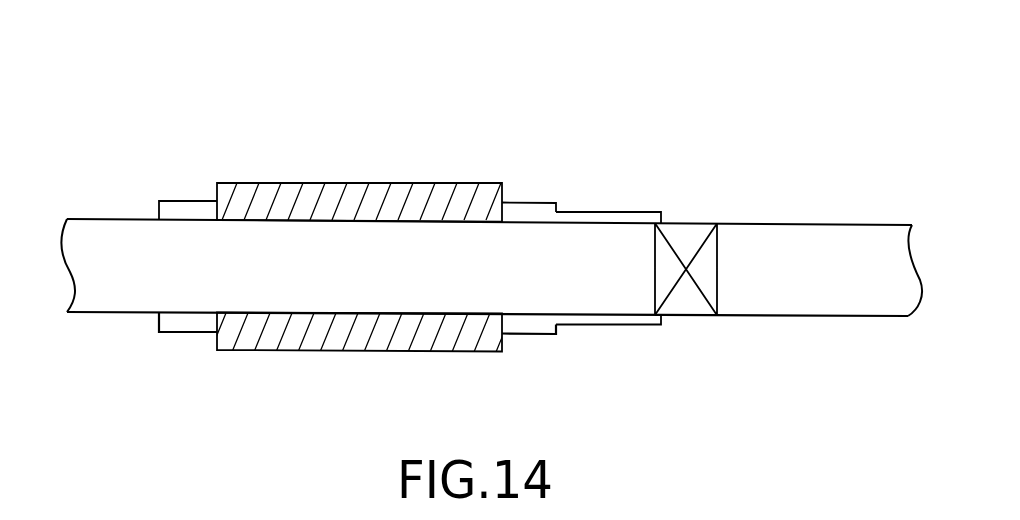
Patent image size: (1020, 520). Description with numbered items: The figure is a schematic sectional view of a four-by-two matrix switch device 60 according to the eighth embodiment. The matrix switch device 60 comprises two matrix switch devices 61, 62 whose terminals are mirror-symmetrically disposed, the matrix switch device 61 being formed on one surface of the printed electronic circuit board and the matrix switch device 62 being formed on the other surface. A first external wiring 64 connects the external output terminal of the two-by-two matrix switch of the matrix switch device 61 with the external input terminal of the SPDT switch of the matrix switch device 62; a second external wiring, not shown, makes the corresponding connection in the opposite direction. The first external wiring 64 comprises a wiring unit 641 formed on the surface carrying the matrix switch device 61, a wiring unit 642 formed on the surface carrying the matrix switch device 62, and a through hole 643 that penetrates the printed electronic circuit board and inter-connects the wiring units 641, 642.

The 4×2 matrix switch device 60 is at (491, 210).
The matrix switch device 61 is at (433, 198).
The matrix switch device 62 is at (405, 330).
The first external wiring 64 is at (719, 209).
The wiring unit 641 is at (632, 218).
The wiring unit 642 is at (637, 320).
The through hole 643 is at (724, 225).